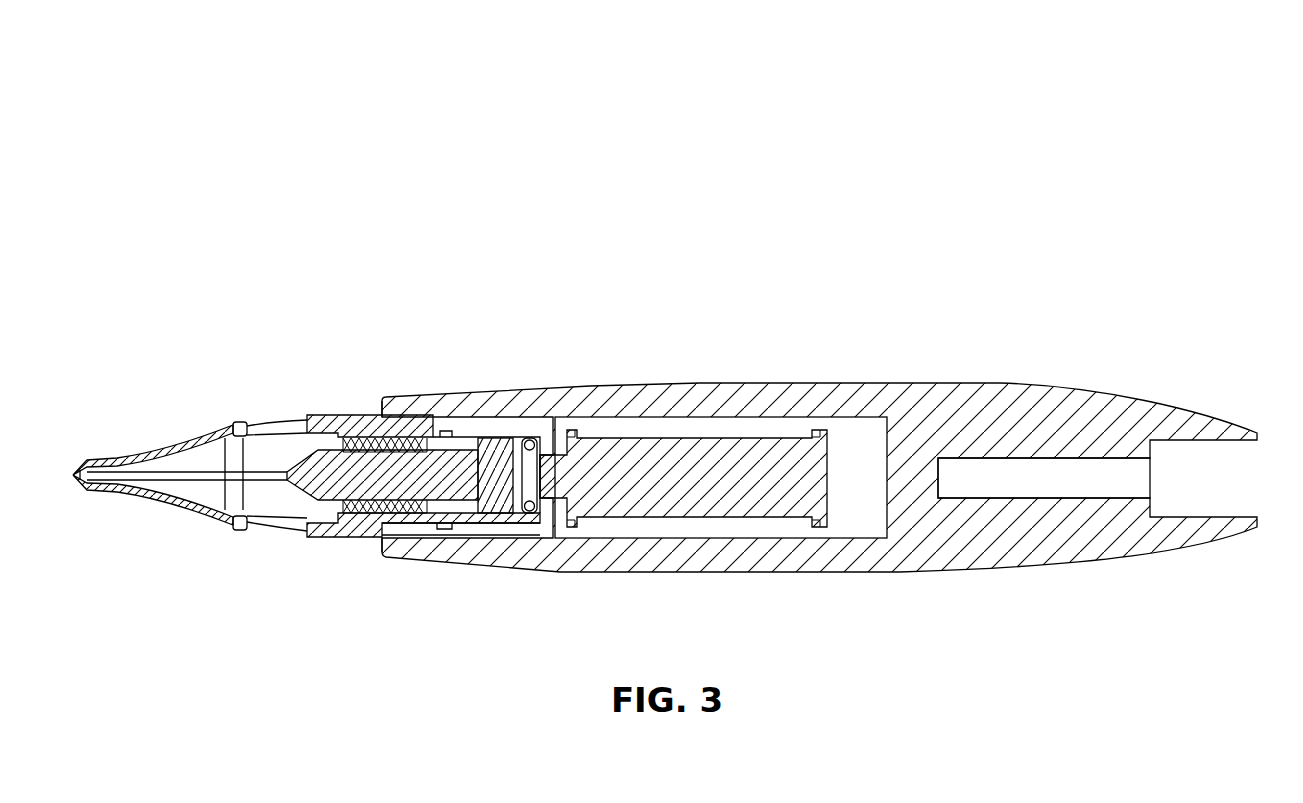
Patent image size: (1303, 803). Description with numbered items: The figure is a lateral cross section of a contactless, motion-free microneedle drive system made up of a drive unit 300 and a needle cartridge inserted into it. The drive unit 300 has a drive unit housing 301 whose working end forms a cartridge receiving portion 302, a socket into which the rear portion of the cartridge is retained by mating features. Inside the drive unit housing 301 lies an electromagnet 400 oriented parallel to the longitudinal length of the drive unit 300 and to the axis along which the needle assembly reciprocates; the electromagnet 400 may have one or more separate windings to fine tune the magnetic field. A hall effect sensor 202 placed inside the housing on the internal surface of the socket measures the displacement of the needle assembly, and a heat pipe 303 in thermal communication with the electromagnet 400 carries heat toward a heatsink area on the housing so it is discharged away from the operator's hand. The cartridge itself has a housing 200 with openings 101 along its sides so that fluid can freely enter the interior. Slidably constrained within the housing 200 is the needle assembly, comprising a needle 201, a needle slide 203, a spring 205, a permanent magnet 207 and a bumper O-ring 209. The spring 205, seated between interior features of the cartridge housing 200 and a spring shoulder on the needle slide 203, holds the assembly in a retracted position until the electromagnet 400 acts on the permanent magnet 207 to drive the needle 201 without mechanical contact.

The openings 101 is at (283, 423).
The needle cartridge housing 200 is at (80, 103).
The needle 201 is at (208, 467).
The hall effect sensor 202 is at (427, 427).
The needle slide 203 is at (330, 478).
The spring 205 is at (360, 506).
The permanent magnet 207 is at (497, 472).
The bumper O-ring 209 is at (531, 440).
The drive unit 300 is at (373, 173).
The drive unit housing 301 is at (980, 423).
The cartridge receiving portion 302 is at (380, 592).
The heat pipe 303 is at (1077, 458).
The electromagnet 400 is at (700, 480).